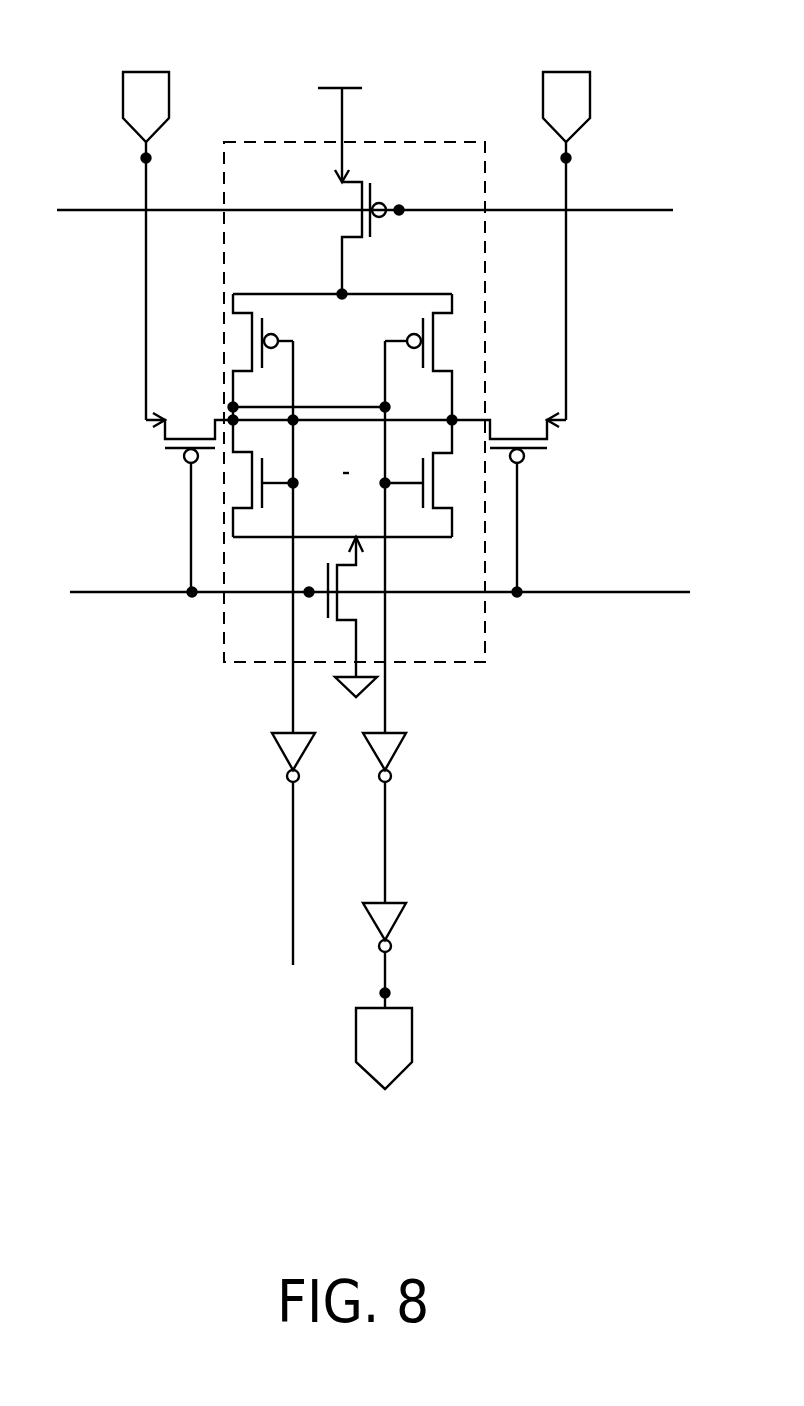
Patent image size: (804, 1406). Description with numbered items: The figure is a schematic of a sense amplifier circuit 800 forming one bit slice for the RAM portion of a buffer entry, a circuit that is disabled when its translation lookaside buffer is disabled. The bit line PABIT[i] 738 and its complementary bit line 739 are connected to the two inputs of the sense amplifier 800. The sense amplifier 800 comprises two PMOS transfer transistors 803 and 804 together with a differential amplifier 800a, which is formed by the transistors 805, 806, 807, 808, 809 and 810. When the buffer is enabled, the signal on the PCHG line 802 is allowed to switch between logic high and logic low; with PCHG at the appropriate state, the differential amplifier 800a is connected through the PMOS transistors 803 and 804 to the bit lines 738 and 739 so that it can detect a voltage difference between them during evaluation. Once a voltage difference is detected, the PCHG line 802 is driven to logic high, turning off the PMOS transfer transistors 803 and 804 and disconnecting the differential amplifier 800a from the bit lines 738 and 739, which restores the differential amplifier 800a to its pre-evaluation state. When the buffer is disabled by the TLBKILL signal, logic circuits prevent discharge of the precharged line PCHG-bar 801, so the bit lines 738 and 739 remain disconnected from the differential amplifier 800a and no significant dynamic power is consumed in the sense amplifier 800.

The sense amplifier circuit 800 is at (438, 58).
The differential amplifier 800a is at (354, 394).
The precharged line PCHG-bar 801 is at (641, 209).
The PCHG line 802 is at (556, 599).
The PMOS transfer transistor 803 is at (173, 432).
The PMOS transfer transistor 804 is at (538, 432).
The transistor 805 is at (261, 367).
The transistor 806 is at (279, 441).
The transistor 807 is at (424, 362).
The transistor 808 is at (423, 468).
The transistor 809 is at (346, 582).
The transistor 810 is at (366, 198).
The bit line PABIT[i] 738 is at (148, 173).
The complementary bit line PABIT[i]-bar 739 is at (569, 178).